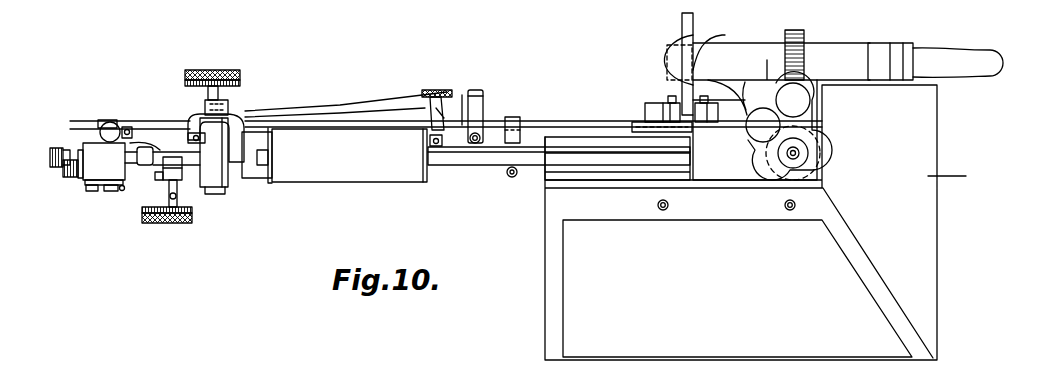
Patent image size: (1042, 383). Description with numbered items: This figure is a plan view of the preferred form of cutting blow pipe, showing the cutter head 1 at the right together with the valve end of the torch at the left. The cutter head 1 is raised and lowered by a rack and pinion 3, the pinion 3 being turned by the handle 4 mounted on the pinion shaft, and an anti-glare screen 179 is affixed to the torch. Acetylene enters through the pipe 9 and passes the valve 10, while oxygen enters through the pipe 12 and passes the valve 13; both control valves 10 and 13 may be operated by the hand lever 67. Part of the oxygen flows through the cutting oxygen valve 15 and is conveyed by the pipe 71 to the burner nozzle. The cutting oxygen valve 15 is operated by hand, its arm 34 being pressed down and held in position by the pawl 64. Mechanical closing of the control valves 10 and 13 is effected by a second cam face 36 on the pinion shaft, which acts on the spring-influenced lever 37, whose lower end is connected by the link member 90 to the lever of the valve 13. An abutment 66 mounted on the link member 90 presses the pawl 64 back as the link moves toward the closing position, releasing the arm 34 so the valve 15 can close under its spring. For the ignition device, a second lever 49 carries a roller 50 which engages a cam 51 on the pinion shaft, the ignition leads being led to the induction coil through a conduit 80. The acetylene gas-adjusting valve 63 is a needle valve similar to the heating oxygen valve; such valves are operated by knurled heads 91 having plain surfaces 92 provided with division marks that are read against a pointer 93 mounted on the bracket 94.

The cutter head 1 is at (741, 222).
The pinion 3 is at (798, 47).
The handle 4 is at (940, 60).
The pipe 9 is at (63, 172).
The valve 10 is at (106, 192).
The pipe 12 is at (52, 160).
The valve 13 is at (92, 191).
The cutting oxygen valve 15 is at (240, 118).
The arm 34 is at (355, 102).
The second cam face 36 is at (700, 55).
The spring-influenced lever 37 is at (706, 123).
The second lever 49 is at (637, 124).
The roller 50 is at (662, 104).
The cam 51 is at (656, 55).
The acetylene gas-adjusting valve 63 is at (160, 222).
The pawl 64 is at (437, 113).
The abutment 66 is at (478, 110).
The hand lever 67 is at (113, 125).
The pipe 71 is at (453, 153).
The conduit 80 is at (485, 166).
The link member 90 is at (462, 95).
The knurled head 91 is at (205, 84).
The plain surface 92 is at (238, 94).
The pointer 93 is at (205, 103).
The bracket 94 is at (232, 130).
The anti-glare screen 179 is at (964, 180).